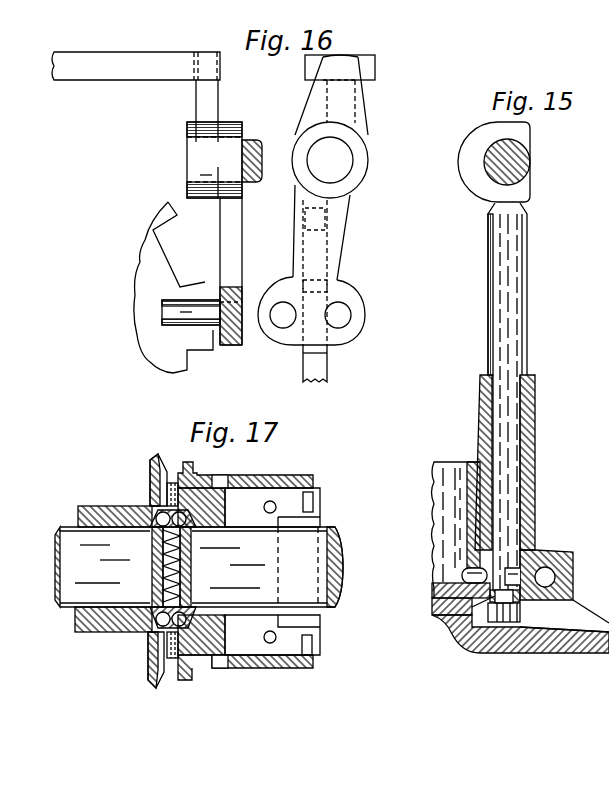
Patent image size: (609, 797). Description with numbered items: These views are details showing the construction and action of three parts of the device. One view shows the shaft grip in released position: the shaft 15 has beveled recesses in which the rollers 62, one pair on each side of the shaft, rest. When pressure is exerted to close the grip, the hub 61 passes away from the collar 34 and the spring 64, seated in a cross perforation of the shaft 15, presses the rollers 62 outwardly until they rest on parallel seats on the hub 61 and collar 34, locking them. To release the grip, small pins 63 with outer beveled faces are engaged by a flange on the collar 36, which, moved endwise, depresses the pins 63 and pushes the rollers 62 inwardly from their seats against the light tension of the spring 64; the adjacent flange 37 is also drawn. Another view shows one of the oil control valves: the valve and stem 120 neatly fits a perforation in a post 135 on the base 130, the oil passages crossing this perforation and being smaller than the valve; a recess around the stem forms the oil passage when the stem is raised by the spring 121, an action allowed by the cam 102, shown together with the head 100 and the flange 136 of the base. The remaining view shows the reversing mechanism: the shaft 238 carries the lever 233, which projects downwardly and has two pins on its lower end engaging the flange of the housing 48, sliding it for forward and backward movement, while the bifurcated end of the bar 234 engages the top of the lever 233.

In FIG. 16, the bar 234 is at (384, 67).
In FIG. 16, the lever 233 is at (242, 228).
In FIG. 16, the shaft 238 is at (272, 133).
In FIG. 16, the housing 48 is at (177, 287).
In FIG. 15, the head 100 is at (530, 164).
In FIG. 15, the cam 102 is at (507, 154).
In FIG. 15, the valve and stem 120 is at (527, 278).
In FIG. 15, the post 135 is at (535, 428).
In FIG. 15, the base 130 is at (535, 480).
In FIG. 15, the flange 136 is at (438, 631).
In FIG. 15, the spring 121 is at (537, 628).
In FIG. 17, the shaft 15 is at (199, 567).
In FIG. 17, the spring 64 is at (162, 572).
In FIG. 17, the rollers 62 is at (192, 530).
In FIG. 17, the hub 61 is at (113, 582).
In FIG. 17, the flange 37 is at (150, 468).
In FIG. 17, the pins 63 is at (167, 495).
In FIG. 17, the collar 36 is at (263, 476).
In FIG. 17, the collar 34 is at (249, 571).